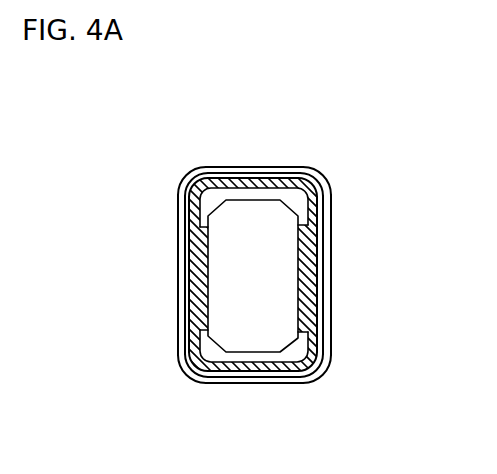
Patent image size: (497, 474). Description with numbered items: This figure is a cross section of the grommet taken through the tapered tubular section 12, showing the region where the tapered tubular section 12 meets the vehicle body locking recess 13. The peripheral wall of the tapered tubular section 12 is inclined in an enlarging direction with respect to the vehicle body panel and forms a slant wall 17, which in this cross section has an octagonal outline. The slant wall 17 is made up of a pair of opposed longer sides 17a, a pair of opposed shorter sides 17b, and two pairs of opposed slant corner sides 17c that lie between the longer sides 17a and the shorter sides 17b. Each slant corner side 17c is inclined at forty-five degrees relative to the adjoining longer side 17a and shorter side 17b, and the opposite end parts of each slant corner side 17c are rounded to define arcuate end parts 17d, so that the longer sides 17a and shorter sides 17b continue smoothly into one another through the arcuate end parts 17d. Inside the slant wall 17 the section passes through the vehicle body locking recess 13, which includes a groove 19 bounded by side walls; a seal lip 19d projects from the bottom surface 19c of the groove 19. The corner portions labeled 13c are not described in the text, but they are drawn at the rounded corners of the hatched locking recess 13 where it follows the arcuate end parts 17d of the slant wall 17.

The tapered tubular section 12 is at (248, 266).
The vehicle body locking recess 13 is at (248, 274).
The corner portion of inner layer 13c is at (279, 265).
The slant wall 17 is at (193, 275).
The longer side 17a is at (244, 275).
The shorter side 17b is at (254, 265).
The slant corner side 17c is at (245, 273).
The arcuate end part 17d is at (251, 269).
The groove 19 is at (255, 234).
The bottom surface 19c is at (304, 264).
The seal lip 19d is at (323, 320).